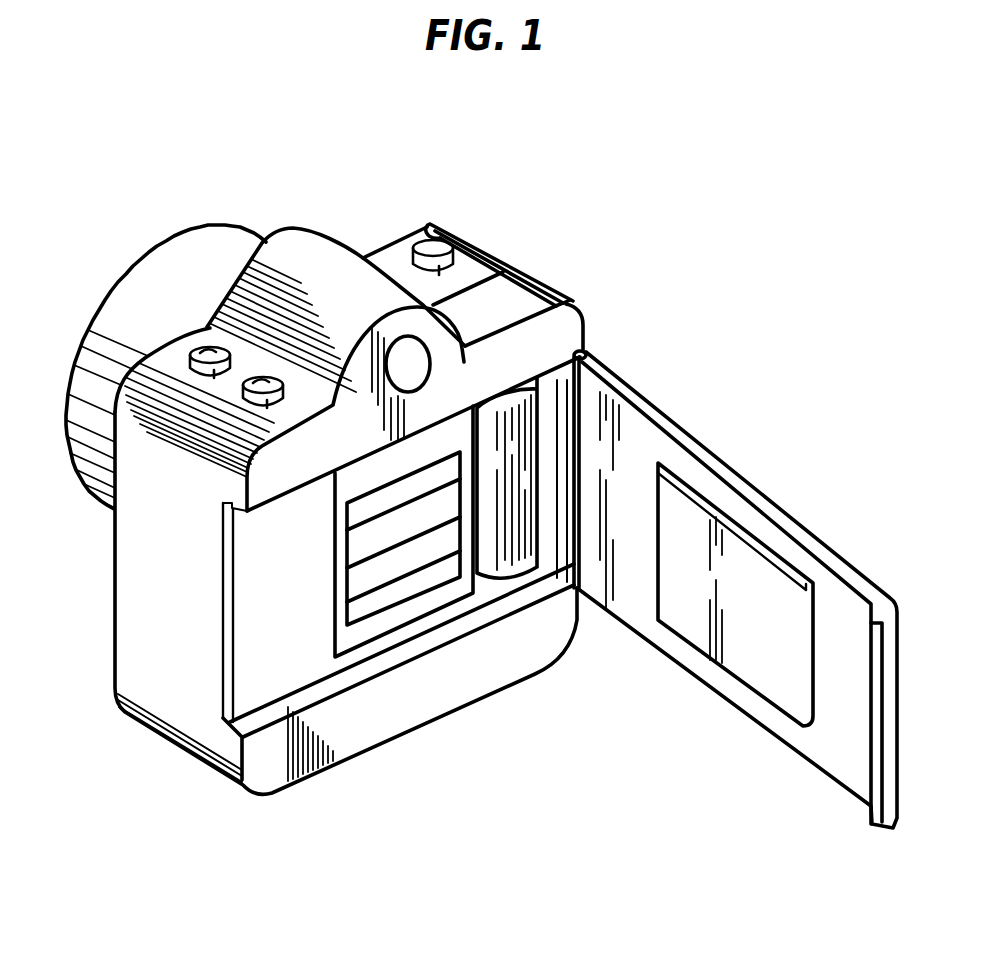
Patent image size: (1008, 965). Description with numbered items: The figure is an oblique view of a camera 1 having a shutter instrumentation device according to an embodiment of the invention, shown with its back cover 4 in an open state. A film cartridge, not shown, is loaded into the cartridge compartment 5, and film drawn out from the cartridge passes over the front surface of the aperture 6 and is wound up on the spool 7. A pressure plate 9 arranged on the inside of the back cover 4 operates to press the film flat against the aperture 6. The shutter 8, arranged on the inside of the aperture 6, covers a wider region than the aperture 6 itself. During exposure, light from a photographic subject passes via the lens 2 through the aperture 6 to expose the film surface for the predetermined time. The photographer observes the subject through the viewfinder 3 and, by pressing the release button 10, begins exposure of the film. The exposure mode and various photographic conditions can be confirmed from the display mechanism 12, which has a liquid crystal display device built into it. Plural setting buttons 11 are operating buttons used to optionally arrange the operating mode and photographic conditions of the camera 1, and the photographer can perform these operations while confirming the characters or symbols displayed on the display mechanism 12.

The camera 1 is at (166, 686).
The lens 2 is at (168, 282).
The viewfinder 3 is at (403, 362).
The back cover 4 is at (643, 463).
The cartridge compartment 5 is at (260, 613).
The aperture 6 is at (374, 608).
The spool 7 is at (527, 553).
The shutter 8 is at (405, 543).
The pressure plate 9 is at (767, 673).
The release button 10 is at (433, 247).
The setting buttons 11 is at (245, 397).
The display mechanism 12 is at (480, 297).